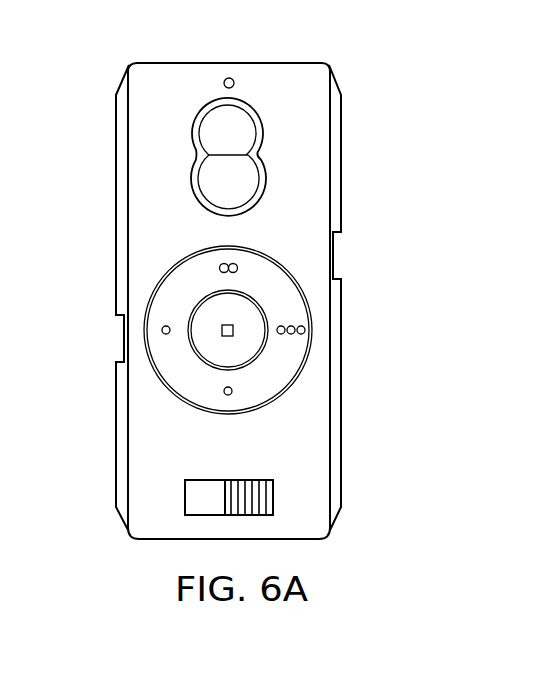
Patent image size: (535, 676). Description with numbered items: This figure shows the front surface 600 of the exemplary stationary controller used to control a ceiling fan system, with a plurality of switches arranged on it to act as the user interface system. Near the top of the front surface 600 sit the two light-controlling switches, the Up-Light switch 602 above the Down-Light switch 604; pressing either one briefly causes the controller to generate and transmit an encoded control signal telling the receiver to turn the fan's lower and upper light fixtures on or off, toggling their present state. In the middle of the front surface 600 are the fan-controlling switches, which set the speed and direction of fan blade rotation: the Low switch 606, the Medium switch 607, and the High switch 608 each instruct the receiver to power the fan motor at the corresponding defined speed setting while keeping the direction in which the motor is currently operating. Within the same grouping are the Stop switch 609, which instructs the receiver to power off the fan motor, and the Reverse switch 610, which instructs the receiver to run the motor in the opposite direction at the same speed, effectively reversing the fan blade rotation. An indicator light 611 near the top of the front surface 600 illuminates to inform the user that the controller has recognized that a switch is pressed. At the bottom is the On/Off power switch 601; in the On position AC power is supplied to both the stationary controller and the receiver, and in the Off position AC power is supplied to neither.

The front surface 600 is at (122, 59).
The power switch 601 is at (260, 479).
The Up-Light switch 602 is at (247, 128).
The Down-Light switch 604 is at (242, 193).
The Low switch 606 is at (161, 330).
The Medium switch 607 is at (219, 267).
The High switch 608 is at (307, 325).
The Stop switch 609 is at (227, 338).
The Reverse switch 610 is at (228, 396).
The indicator light 611 is at (223, 84).